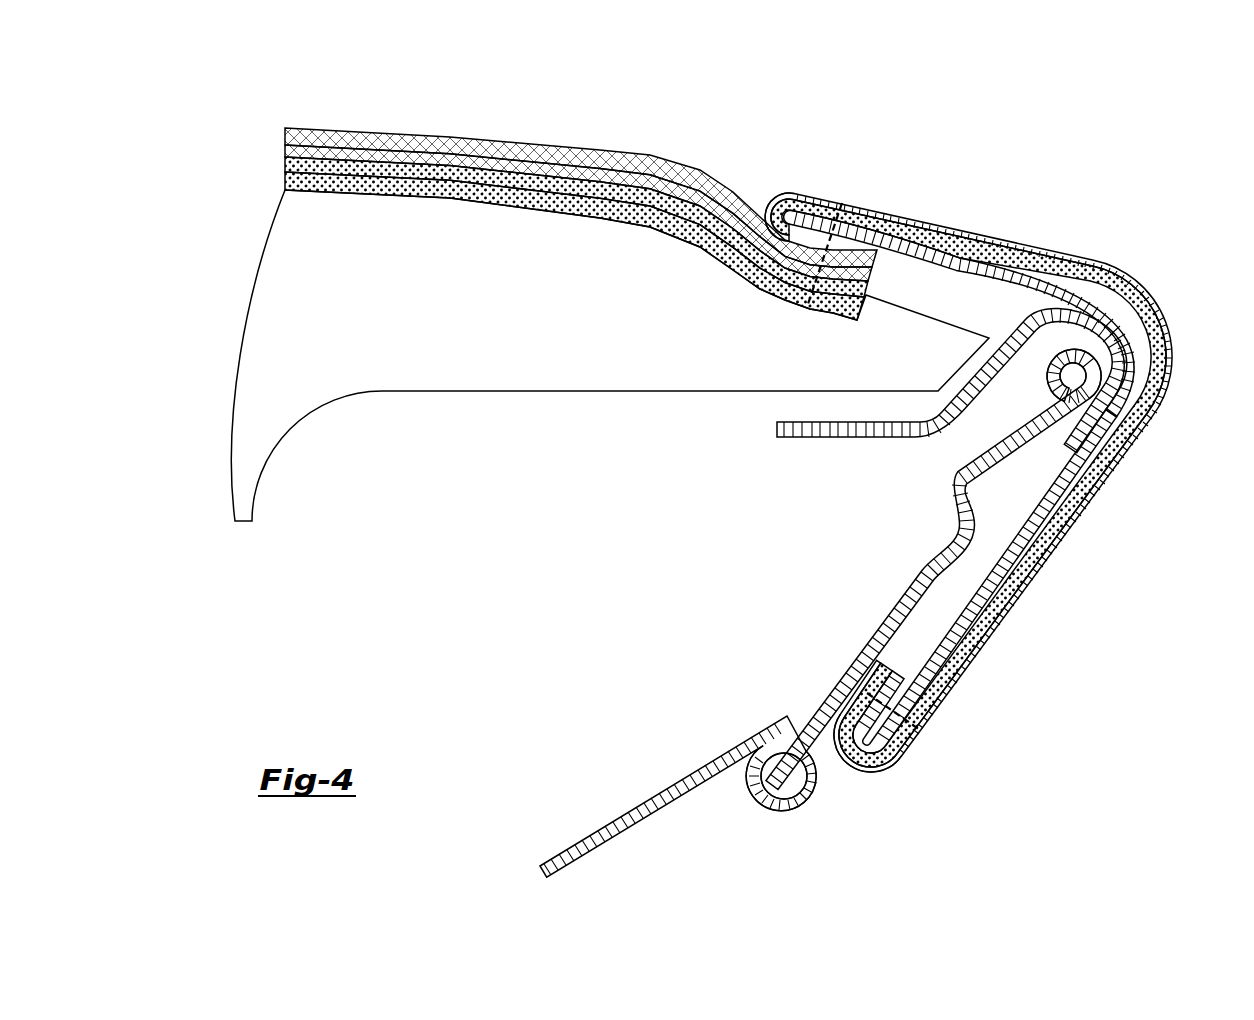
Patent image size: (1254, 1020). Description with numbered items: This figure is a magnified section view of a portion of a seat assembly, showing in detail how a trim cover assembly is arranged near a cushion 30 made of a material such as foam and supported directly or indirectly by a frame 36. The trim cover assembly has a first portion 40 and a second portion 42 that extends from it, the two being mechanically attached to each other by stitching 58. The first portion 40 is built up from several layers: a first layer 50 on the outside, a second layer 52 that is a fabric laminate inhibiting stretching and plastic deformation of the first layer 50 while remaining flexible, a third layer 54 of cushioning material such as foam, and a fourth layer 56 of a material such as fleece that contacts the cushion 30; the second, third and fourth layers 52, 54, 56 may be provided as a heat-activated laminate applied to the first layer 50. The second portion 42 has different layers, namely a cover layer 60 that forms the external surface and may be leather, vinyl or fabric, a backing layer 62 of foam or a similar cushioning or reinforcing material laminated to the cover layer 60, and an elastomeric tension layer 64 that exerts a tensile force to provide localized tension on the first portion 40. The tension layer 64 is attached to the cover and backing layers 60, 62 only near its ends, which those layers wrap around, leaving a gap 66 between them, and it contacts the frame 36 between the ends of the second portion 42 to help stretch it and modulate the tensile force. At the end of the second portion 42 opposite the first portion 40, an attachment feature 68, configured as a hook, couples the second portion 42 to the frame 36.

The cushion 30 is at (585, 350).
The frame 36 is at (837, 440).
The first portion 40 is at (513, 199).
The second portion 42 is at (934, 708).
The first layer 50 is at (286, 134).
The second layer 52 is at (286, 151).
The third layer 54 is at (286, 164).
The fourth layer 56 is at (286, 181).
The stitching 58 is at (840, 204).
The cover layer 60 is at (1000, 625).
The backing layer 62 is at (1096, 301).
The tension layer 64 is at (1052, 497).
The gap 66 is at (1129, 352).
The attachment feature 68 is at (808, 801).